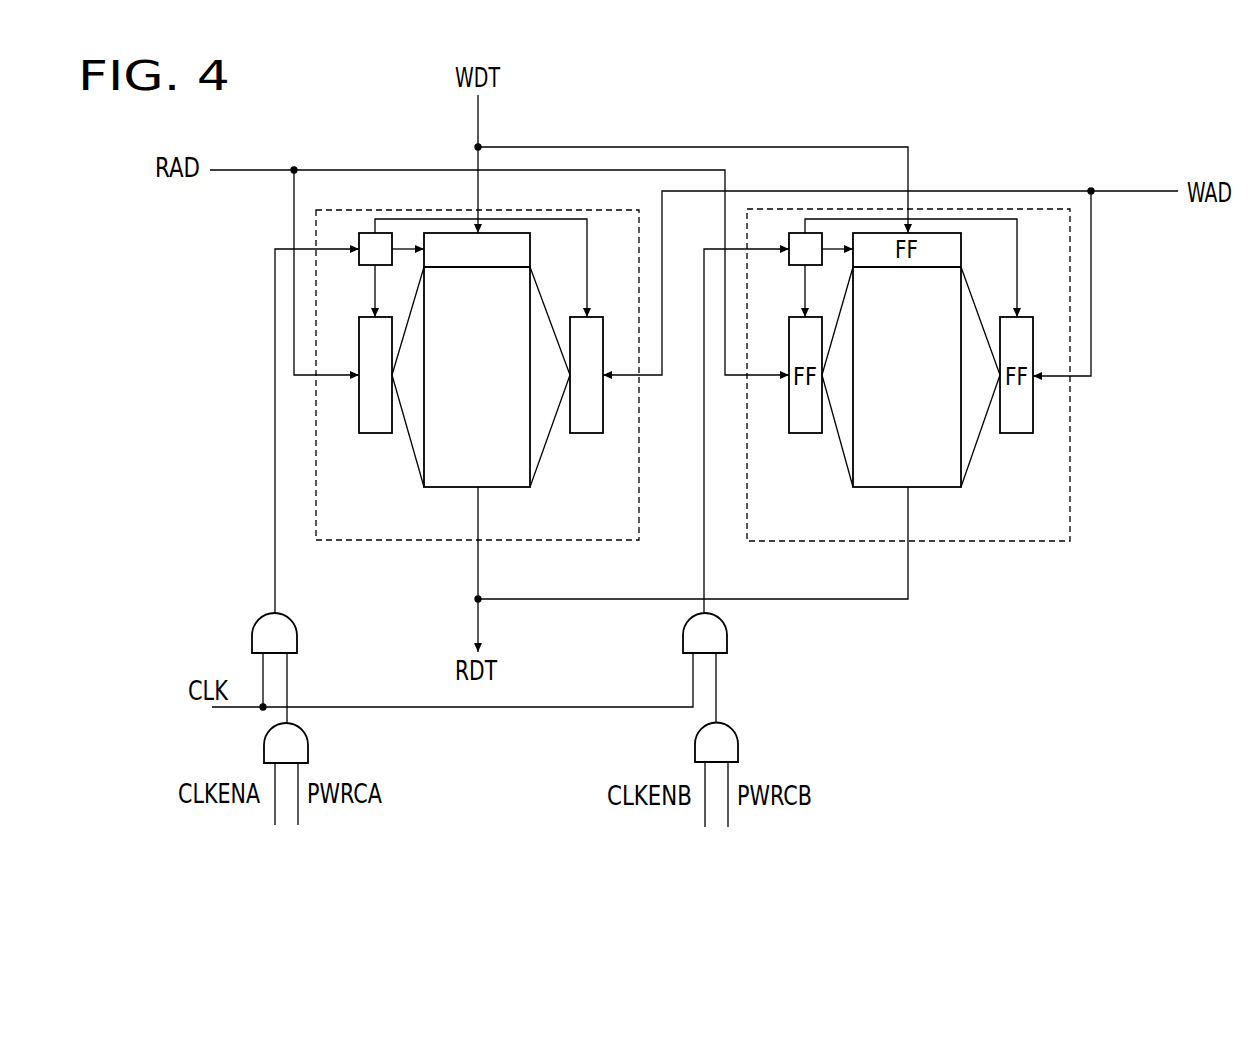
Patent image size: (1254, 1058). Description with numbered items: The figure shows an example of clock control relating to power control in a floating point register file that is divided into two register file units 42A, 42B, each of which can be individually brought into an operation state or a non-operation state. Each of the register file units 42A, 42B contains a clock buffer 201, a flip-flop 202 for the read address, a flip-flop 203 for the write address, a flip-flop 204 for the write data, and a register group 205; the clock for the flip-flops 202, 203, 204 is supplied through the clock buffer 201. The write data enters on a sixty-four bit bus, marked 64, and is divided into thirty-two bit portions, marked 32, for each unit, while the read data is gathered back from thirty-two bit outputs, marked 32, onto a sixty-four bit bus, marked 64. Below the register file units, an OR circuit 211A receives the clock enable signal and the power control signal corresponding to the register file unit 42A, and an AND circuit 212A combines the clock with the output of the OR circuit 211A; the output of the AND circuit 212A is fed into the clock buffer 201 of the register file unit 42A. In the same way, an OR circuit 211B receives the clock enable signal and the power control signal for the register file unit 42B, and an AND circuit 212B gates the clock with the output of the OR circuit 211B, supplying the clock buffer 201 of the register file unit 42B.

The 64-bit bus width 64 is at (468, 102).
The 32-bit bus width 32 is at (468, 178).
The clock buffer 201 is at (360, 261).
The flip-flop for read address 202 is at (375, 434).
The flip-flop for write address 203 is at (585, 434).
The flip-flop for write data 204 is at (562, 248).
The register group 205 is at (492, 488).
The register file unit 42A is at (380, 540).
The register file unit 42B is at (1020, 541).
The AND circuit 212A is at (298, 632).
The AND circuit 212B is at (728, 632).
The OR circuit 211A is at (309, 742).
The OR circuit 211B is at (739, 742).